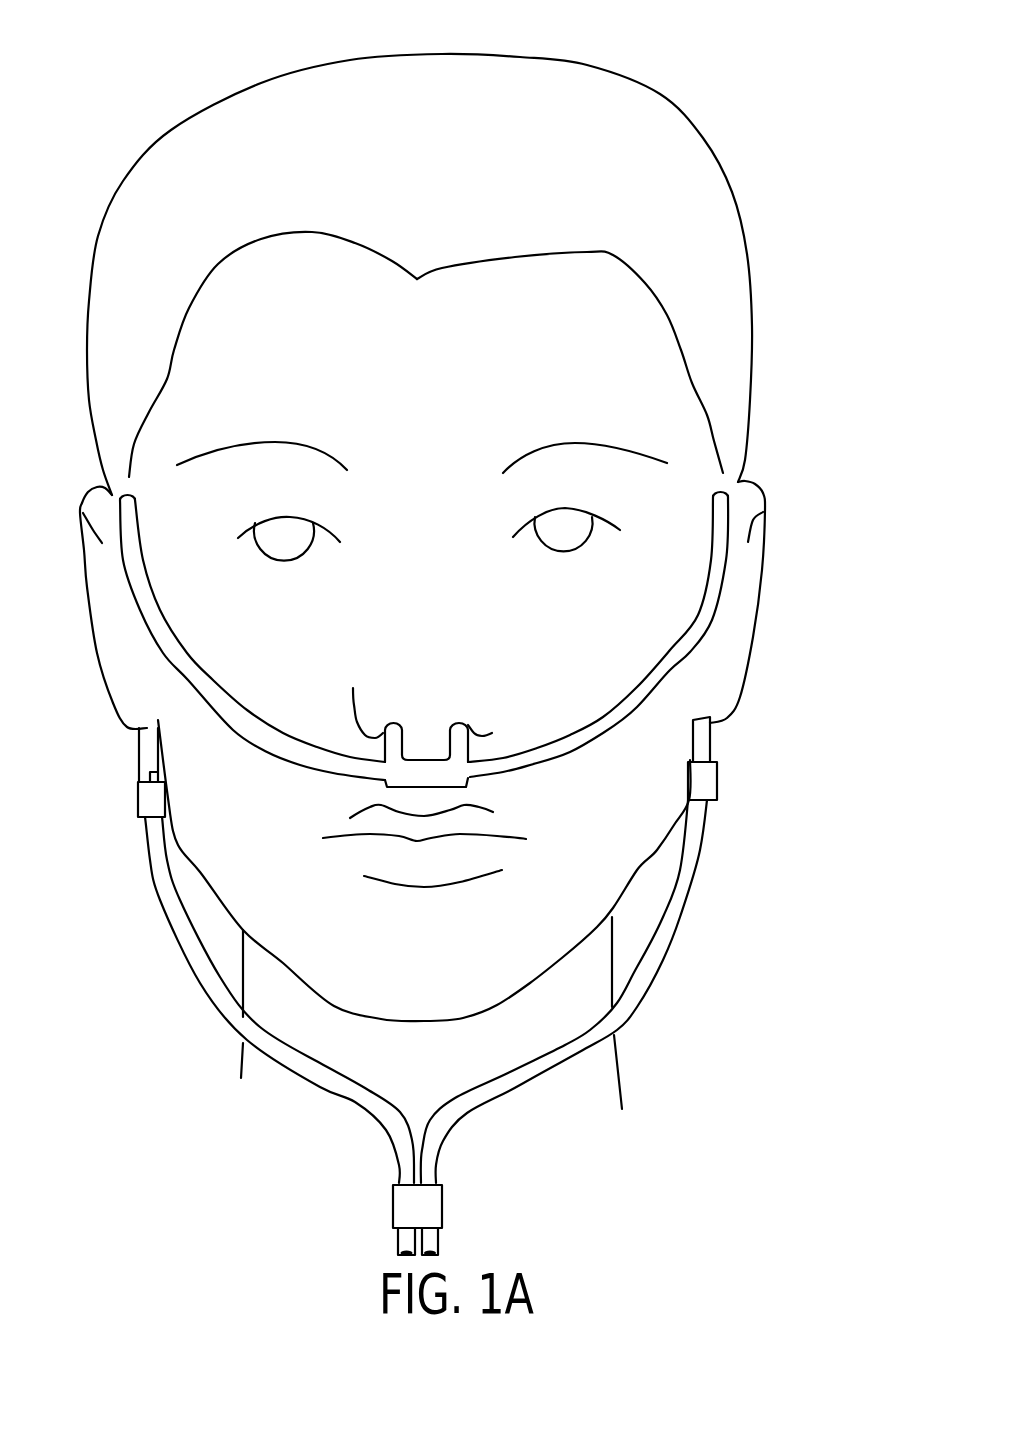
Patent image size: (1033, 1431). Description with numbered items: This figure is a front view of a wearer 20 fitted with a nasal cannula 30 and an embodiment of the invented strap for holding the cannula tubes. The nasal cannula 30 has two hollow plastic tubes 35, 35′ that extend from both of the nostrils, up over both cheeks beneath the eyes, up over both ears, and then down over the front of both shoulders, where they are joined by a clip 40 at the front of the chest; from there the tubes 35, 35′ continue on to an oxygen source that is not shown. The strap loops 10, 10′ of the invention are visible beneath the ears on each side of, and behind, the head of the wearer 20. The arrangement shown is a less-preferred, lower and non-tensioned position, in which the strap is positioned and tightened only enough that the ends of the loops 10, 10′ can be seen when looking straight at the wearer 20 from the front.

The wearer 20 is at (622, 60).
The nasal cannula 30 is at (634, 900).
The strap loop 10 is at (135, 795).
The strap loop 10′ is at (801, 745).
The cannula tube 35 is at (200, 983).
The cannula tube 35′ is at (628, 1003).
The clip 40 is at (443, 1205).